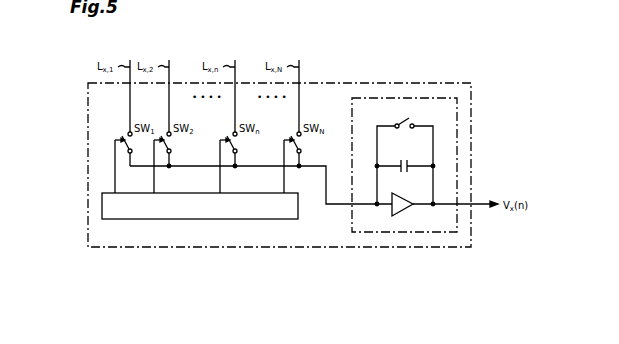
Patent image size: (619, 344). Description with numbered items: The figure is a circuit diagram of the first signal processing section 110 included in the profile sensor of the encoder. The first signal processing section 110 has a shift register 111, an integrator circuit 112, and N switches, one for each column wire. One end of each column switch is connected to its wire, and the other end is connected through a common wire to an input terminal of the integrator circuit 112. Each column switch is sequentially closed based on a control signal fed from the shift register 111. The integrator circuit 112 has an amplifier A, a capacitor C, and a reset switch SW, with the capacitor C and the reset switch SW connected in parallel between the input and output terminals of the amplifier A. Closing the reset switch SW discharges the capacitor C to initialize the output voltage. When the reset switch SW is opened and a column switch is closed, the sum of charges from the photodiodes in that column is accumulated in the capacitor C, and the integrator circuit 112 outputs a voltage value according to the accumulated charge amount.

The first signal processing section 110 is at (332, 82).
The shift register 111 is at (220, 220).
The integrator circuit 112 is at (350, 221).